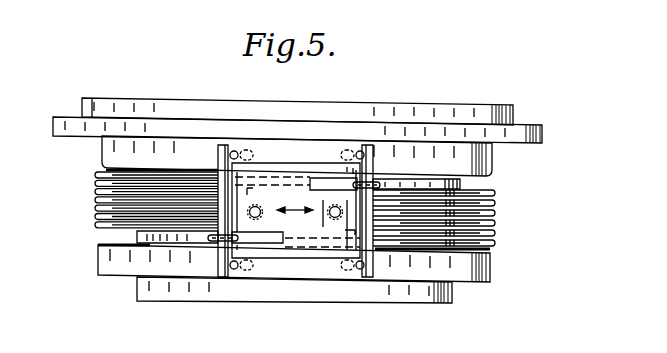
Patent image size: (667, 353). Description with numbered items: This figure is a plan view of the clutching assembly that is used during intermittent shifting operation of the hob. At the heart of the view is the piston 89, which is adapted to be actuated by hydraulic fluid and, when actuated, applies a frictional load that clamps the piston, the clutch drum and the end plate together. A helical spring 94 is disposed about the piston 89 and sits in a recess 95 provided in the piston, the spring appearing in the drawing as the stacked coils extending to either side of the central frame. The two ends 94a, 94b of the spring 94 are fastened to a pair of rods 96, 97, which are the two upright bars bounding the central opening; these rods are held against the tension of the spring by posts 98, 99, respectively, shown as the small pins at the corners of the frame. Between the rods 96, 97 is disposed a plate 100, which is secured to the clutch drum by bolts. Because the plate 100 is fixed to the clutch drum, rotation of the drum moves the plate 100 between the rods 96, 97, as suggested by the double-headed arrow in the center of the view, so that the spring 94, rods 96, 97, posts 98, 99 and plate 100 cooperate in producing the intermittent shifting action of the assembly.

The piston 89 is at (483, 162).
The helical spring 94 is at (495, 212).
The end of spring 94a is at (223, 243).
The end of spring 94b is at (375, 184).
The recess 95 is at (458, 187).
The rod 96 is at (365, 272).
The rod 97 is at (227, 147).
The post 98 is at (357, 152).
The post 99 is at (237, 151).
The plate 100 is at (303, 258).